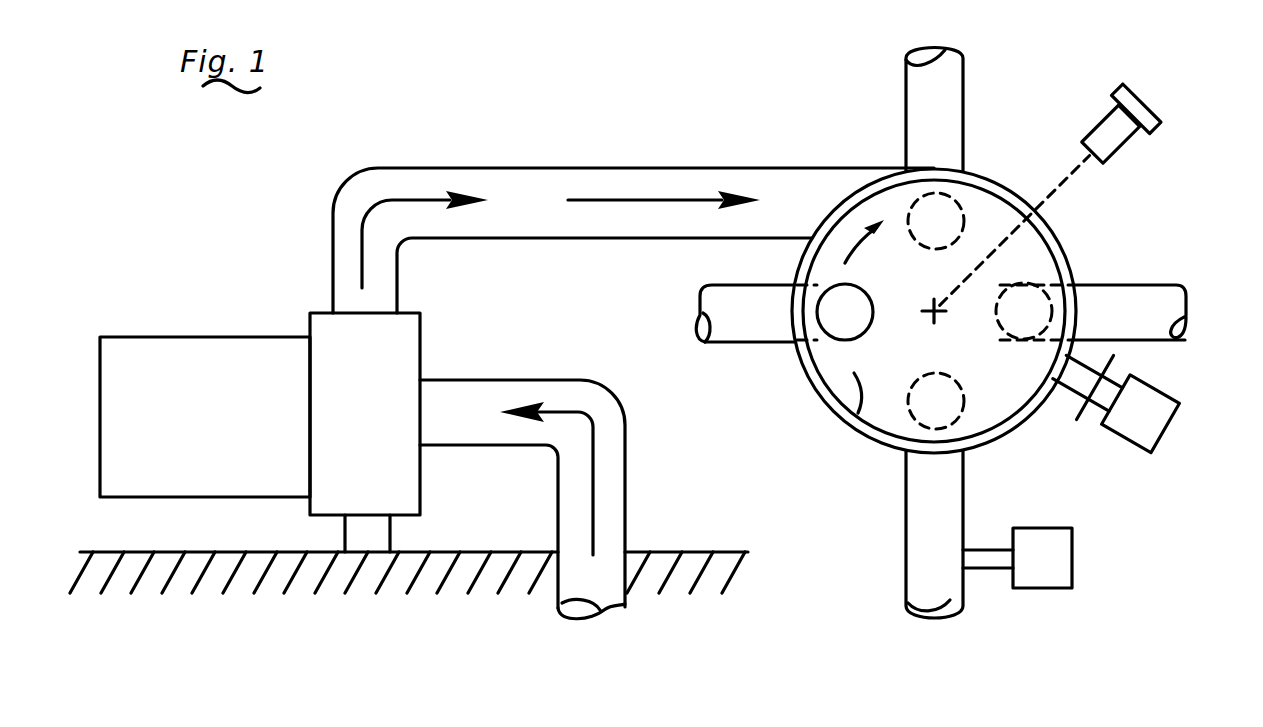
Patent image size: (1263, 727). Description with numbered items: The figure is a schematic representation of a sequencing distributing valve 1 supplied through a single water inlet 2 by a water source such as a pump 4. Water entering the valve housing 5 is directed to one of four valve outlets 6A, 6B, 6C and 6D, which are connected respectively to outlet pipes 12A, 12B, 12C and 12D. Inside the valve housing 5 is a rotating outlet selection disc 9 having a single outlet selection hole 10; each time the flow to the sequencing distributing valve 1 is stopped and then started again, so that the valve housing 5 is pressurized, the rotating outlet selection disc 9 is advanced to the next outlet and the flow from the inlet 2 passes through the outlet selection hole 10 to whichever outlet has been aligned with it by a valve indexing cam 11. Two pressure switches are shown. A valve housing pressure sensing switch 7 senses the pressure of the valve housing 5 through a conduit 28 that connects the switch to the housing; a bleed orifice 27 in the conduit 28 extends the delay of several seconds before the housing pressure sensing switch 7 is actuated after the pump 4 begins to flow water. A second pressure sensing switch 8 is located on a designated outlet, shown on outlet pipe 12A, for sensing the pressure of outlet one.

The sequencing distributing valve 1 is at (872, 158).
The water inlet 2 is at (802, 192).
The pump 4 is at (330, 330).
The valve housing 5 is at (1068, 250).
The valve outlet 6A is at (965, 403).
The valve outlet 6B is at (853, 318).
The valve outlet 6C is at (964, 221).
The valve outlet 6D is at (1011, 323).
The valve housing pressure sensing switch 7 is at (1170, 393).
The pressure sensing switch 8 is at (1073, 565).
The rotating outlet selection disc 9 is at (858, 413).
The outlet selection hole 10 is at (860, 286).
The valve indexing cam 11 is at (1143, 97).
The outlet pipe 12A is at (968, 502).
The outlet pipe 12B is at (742, 343).
The outlet pipe 12C is at (966, 83).
The outlet pipe 12D is at (1133, 283).
The bleed orifice 27 is at (1090, 424).
The conduit 28 is at (1068, 392).